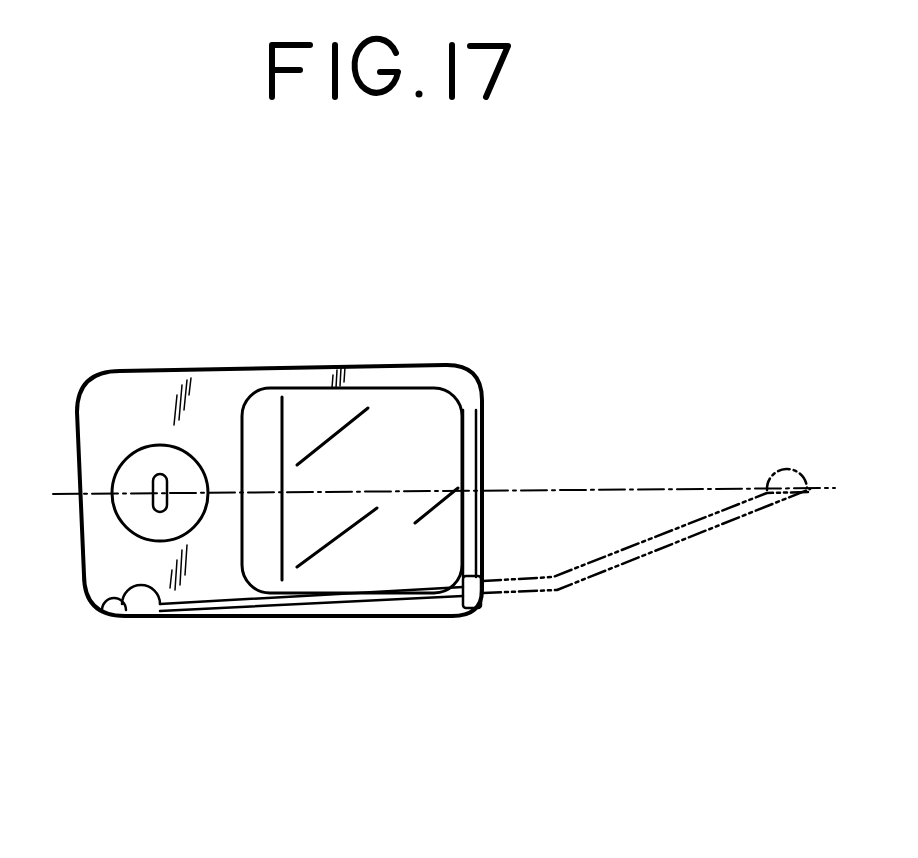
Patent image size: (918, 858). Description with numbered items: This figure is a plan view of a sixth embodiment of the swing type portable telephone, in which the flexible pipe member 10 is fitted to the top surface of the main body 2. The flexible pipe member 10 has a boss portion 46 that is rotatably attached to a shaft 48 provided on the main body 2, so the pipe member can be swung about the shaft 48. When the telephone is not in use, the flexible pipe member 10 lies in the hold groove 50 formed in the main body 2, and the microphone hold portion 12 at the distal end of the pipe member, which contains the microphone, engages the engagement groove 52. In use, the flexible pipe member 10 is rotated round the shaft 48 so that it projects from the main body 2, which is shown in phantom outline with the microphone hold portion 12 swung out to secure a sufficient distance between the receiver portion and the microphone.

The main body 2 is at (202, 366).
The flexible pipe member 10 is at (300, 618).
The microphone hold portion 12 is at (140, 610).
The boss portion 46 is at (460, 616).
The shaft 48 is at (486, 606).
The hold groove 50 is at (215, 612).
The engagement groove 52 is at (103, 608).